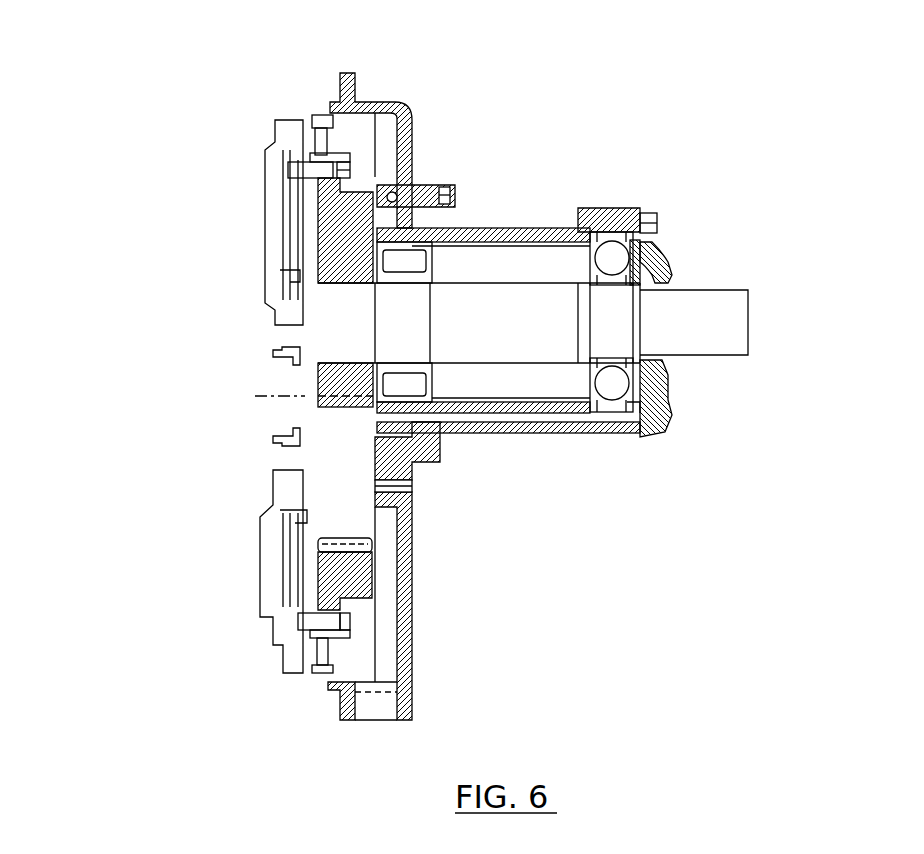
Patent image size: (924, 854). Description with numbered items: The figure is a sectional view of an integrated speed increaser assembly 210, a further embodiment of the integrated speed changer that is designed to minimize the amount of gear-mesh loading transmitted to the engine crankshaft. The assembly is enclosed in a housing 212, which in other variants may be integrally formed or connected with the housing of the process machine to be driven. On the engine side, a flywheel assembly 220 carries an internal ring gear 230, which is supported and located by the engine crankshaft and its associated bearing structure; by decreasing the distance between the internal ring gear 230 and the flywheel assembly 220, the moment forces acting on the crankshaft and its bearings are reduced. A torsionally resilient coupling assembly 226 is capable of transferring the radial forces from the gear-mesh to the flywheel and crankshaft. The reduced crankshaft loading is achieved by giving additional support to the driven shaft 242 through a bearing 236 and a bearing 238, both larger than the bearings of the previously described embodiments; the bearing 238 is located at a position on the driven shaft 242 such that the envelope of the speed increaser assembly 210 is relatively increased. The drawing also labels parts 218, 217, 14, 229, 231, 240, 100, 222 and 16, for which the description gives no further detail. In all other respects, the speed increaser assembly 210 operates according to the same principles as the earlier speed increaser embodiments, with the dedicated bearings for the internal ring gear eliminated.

The speed increaser assembly 210 is at (182, 70).
The flywheel assembly 220 is at (320, 86).
The housing 212 is at (392, 98).
The bearing housing 218 is at (482, 228).
The bearing 217 is at (660, 247).
The shaft 14 is at (830, 196).
The bearing 238 is at (650, 432).
The driven shaft 242 is at (520, 363).
The bearing 236 is at (440, 438).
The retaining ring 229 is at (410, 484).
The internal ring gear 230 is at (365, 598).
The flange 231 is at (378, 703).
The hub 240 is at (350, 402).
The axis 100 is at (268, 393).
The clutch cover 222 is at (262, 222).
The torsionally resilient coupling assembly 226 is at (293, 137).
The clutch 16 is at (182, 97).